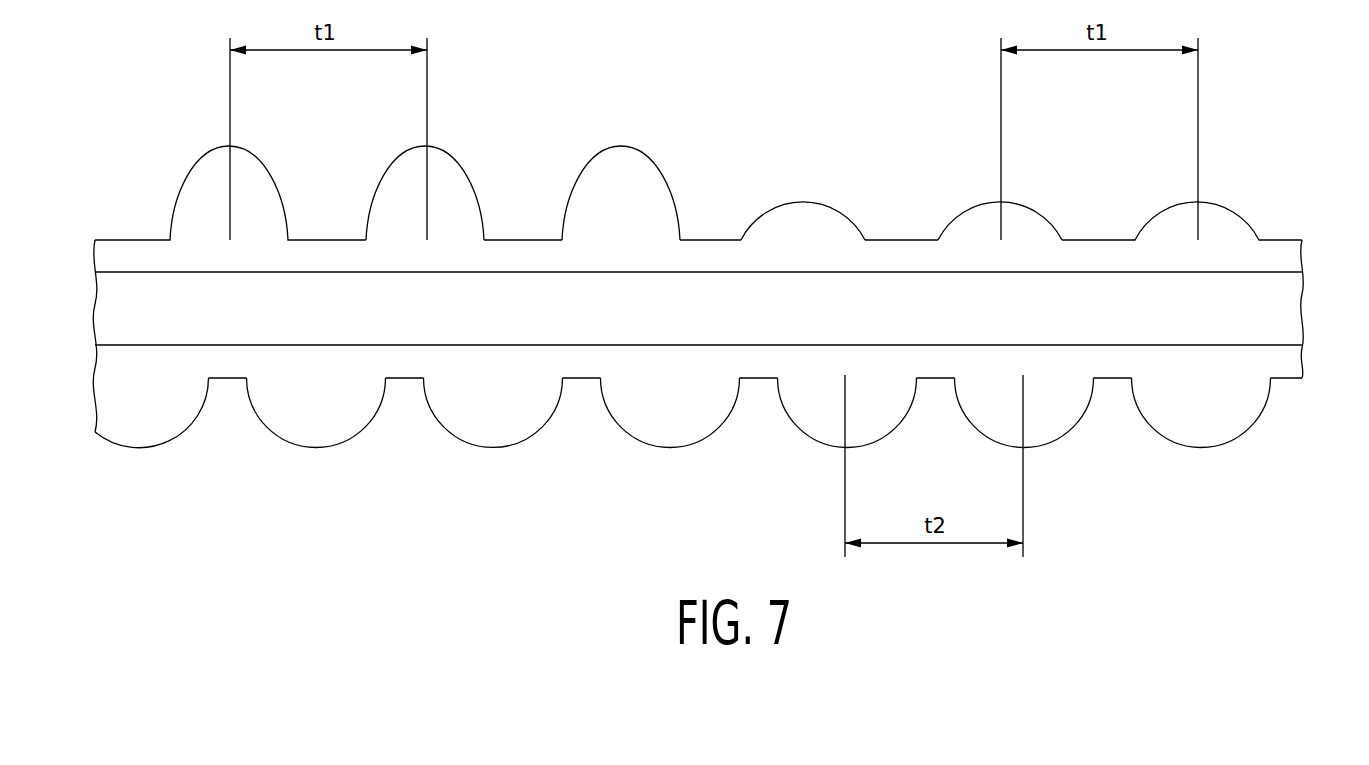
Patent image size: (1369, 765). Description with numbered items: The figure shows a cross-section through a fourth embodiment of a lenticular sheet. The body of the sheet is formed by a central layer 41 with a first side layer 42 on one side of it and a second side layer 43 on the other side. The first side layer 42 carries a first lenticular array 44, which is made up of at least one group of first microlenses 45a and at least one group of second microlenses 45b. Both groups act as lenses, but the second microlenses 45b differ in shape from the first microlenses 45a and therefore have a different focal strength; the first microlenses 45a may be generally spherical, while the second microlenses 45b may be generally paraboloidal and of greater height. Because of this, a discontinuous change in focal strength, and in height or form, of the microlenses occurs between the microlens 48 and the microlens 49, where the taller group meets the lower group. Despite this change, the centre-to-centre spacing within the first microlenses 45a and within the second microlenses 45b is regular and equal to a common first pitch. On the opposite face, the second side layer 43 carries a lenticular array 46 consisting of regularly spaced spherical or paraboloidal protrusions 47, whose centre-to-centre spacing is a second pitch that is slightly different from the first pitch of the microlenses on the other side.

The central layer 41 is at (1280, 318).
The first side layer 42 is at (730, 162).
The second side layer 43 is at (1283, 358).
The first lenticular array 44 is at (1280, 252).
The first microlenses 45a is at (1034, 208).
The second microlenses 45b is at (452, 173).
The lenticular array 46 is at (730, 454).
The protrusions 47 is at (695, 445).
The microlens 48 is at (648, 173).
The microlens 49 is at (810, 202).